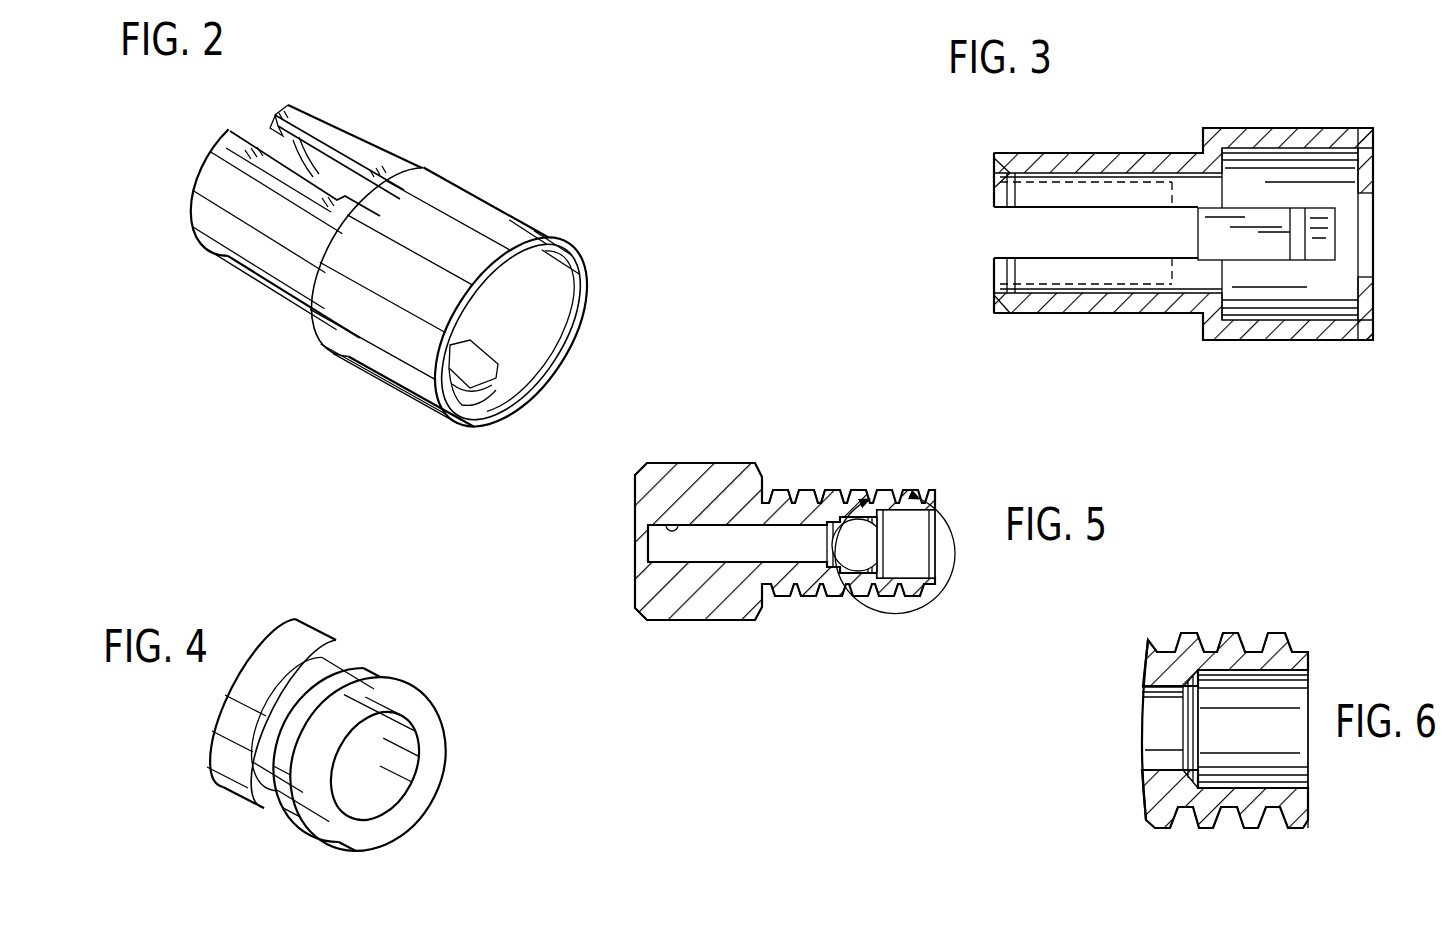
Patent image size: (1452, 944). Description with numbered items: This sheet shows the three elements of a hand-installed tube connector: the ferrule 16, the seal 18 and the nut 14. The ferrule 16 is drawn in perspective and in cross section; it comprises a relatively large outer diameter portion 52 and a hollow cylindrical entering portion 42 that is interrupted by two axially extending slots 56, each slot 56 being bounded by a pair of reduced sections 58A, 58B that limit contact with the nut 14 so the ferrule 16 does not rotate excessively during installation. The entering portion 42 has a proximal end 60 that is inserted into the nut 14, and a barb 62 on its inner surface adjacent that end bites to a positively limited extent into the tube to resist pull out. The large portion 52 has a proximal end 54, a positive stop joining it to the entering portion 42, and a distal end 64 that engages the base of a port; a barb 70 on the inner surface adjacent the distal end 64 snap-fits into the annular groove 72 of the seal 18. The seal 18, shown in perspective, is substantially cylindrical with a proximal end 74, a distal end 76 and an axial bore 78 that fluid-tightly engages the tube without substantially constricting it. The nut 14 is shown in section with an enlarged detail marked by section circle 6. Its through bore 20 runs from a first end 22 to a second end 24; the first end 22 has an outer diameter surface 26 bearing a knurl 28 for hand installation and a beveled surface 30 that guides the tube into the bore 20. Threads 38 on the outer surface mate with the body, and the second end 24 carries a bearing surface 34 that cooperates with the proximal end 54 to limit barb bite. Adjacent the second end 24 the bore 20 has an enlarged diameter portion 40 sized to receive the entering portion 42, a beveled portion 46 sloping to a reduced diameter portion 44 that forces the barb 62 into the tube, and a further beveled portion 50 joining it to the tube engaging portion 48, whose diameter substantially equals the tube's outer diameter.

In FIG. 5, the section line of FIG. 6 is at (895, 533).
In FIG. 5, the nut 14 is at (711, 620).
In FIG. 6, the nut 14 is at (1162, 830).
In FIG. 2, the ferrule 16 is at (528, 206).
In FIG. 3, the ferrule 16 is at (1240, 116).
In FIG. 4, the seal 18 is at (419, 662).
In FIG. 5, the through bore 20 is at (662, 548).
In FIG. 6, the through bore 20 is at (1160, 723).
In FIG. 5, the first end 22 is at (723, 460).
In FIG. 5, the second end 24 is at (974, 491).
In FIG. 6, the second end 24 is at (1320, 814).
In FIG. 5, the outer diameter surface 26 is at (756, 626).
In FIG. 5, the knurl 28 is at (642, 622).
In FIG. 5, the beveled surface 30 is at (637, 565).
In FIG. 5, the bearing surface 34 is at (947, 568).
In FIG. 6, the bearing surface 34 is at (1308, 657).
In FIG. 5, the threads 38 is at (810, 595).
In FIG. 6, the threads 38 is at (1183, 640).
In FIG. 5, the enlarged diameter portion 40 is at (907, 572).
In FIG. 6, the enlarged diameter portion 40 is at (1263, 777).
In FIG. 2, the entering portion 42 is at (282, 270).
In FIG. 3, the entering portion 42 is at (1172, 313).
In FIG. 5, the reduced diameter portion 44 is at (853, 570).
In FIG. 6, the reduced diameter portion 44 is at (1160, 763).
In FIG. 5, the beveled portion 46 is at (857, 553).
In FIG. 6, the beveled portion 46 is at (1193, 800).
In FIG. 5, the tube engaging portion 48 is at (668, 527).
In FIG. 5, the beveled portion 50 is at (817, 520).
In FIG. 2, the large outer diameter portion 52 is at (401, 370).
In FIG. 3, the large outer diameter portion 52 is at (1320, 342).
In FIG. 2, the proximal end 54 is at (413, 166).
In FIG. 3, the proximal end 54 is at (1203, 145).
In FIG. 2, the slot 56 is at (257, 137).
In FIG. 3, the slot 56 is at (1025, 238).
In FIG. 2, the reduced section 58A is at (311, 123).
In FIG. 3, the reduced section 58A is at (1063, 213).
In FIG. 2, the reduced section 58B is at (283, 175).
In FIG. 3, the reduced section 58B is at (1122, 258).
In FIG. 2, the proximal end 60 is at (200, 219).
In FIG. 3, the proximal end 60 is at (998, 295).
In FIG. 2, the barb 62 is at (268, 128).
In FIG. 3, the barb 62 is at (993, 190).
In FIG. 2, the distal end 64 is at (576, 266).
In FIG. 3, the distal end 64 is at (1373, 145).
In FIG. 2, the barb 70 is at (482, 376).
In FIG. 3, the barb 70 is at (1330, 242).
In FIG. 4, the groove 72 is at (377, 670).
In FIG. 4, the proximal end 74 is at (255, 638).
In FIG. 4, the distal end 76 is at (413, 790).
In FIG. 4, the axial bore 78 is at (400, 752).